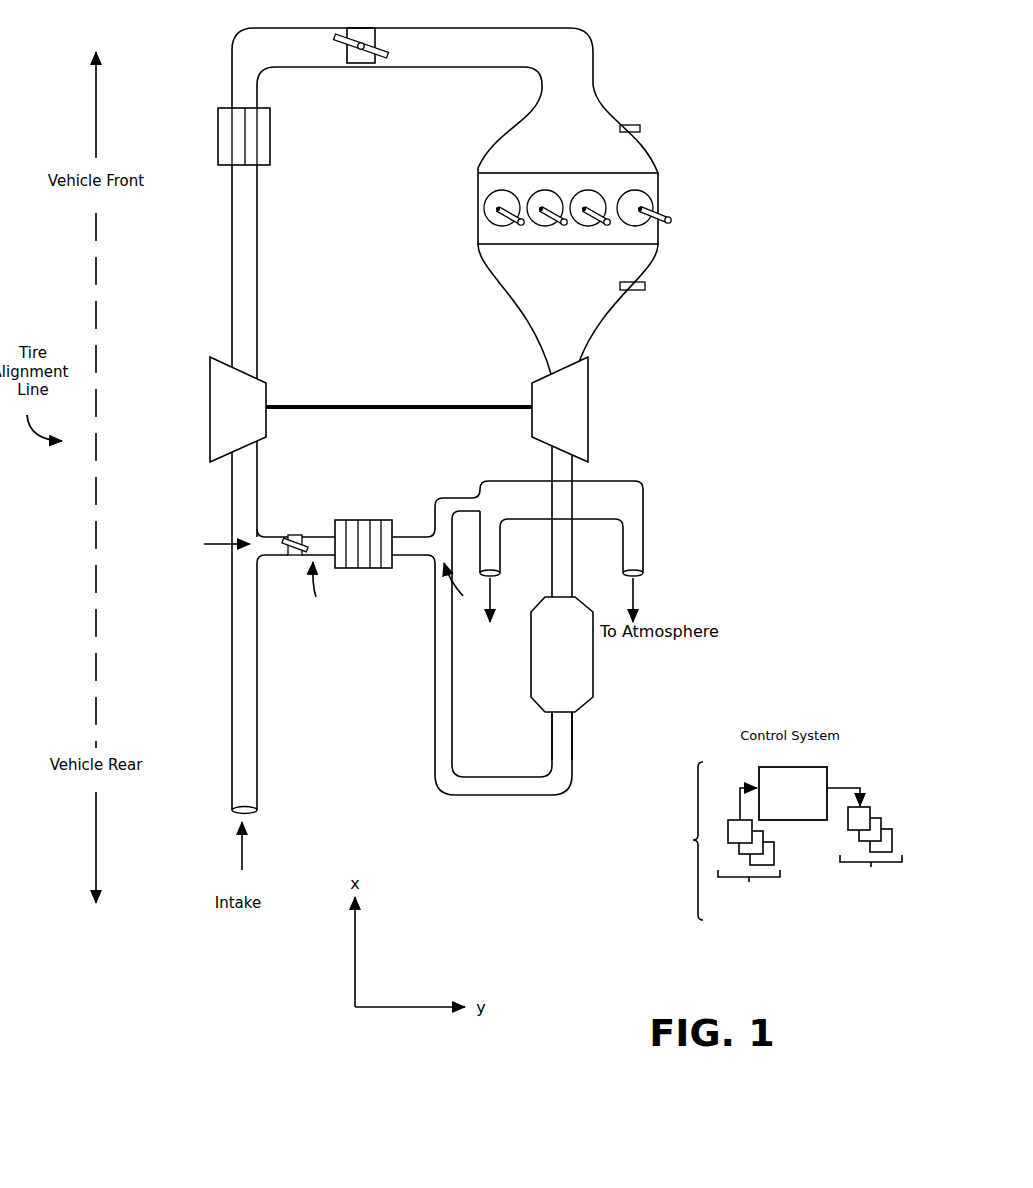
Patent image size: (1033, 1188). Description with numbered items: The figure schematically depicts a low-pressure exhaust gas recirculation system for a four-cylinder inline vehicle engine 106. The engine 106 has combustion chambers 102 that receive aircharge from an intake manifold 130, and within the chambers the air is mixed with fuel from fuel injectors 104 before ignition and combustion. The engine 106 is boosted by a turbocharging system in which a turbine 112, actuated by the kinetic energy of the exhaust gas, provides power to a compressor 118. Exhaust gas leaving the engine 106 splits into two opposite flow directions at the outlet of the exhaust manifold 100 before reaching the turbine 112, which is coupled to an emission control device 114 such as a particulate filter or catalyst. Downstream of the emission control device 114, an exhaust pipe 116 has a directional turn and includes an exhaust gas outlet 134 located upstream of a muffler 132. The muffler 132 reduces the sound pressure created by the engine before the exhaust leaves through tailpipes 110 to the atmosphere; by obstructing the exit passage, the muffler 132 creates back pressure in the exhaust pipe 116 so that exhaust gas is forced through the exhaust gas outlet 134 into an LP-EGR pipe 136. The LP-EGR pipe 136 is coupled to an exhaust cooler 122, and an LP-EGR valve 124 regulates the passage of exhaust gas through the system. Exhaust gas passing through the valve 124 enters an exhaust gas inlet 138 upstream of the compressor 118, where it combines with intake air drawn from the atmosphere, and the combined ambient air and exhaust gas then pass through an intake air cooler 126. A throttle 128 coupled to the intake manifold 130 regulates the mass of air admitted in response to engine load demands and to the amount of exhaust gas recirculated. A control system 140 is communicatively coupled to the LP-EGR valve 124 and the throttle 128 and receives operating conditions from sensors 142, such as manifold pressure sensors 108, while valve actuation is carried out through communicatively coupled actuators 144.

The exhaust manifold 100 is at (558, 292).
The combustion chambers 102 is at (493, 194).
The fuel injectors 104 is at (519, 225).
The engine 106 is at (553, 173).
The manifold pressure sensors 108 is at (628, 125).
The tailpipes 110 is at (500, 543).
The turbine 112 is at (547, 414).
The emission control device 114 is at (549, 659).
The exhaust pipe 116 is at (572, 743).
The compressor 118 is at (221, 414).
The exhaust cooler 122 is at (366, 568).
The LP-EGR valve 124 is at (294, 537).
The intake air cooler 126 is at (270, 133).
The throttle 128 is at (365, 28).
The intake manifold 130 is at (558, 136).
The muffler 132 is at (505, 508).
The exhaust gas outlet 134 is at (482, 657).
The LP-EGR pipe 136 is at (313, 585).
The exhaust gas inlet 138 is at (209, 544).
The control system 140 is at (793, 782).
The sensors 142 is at (748, 852).
The actuators 144 is at (868, 845).